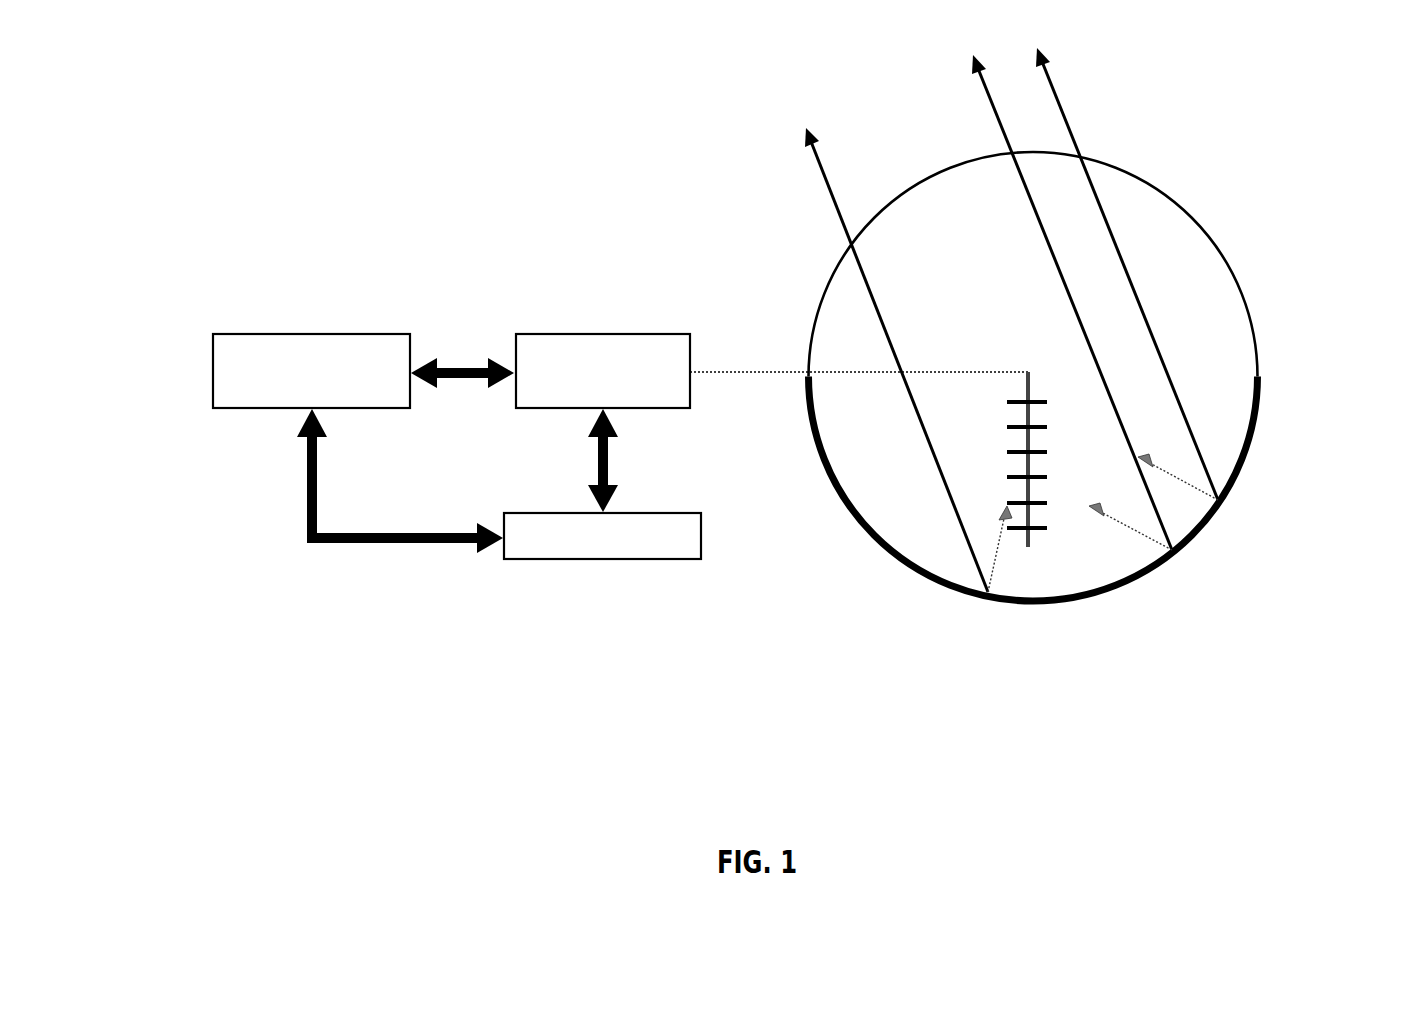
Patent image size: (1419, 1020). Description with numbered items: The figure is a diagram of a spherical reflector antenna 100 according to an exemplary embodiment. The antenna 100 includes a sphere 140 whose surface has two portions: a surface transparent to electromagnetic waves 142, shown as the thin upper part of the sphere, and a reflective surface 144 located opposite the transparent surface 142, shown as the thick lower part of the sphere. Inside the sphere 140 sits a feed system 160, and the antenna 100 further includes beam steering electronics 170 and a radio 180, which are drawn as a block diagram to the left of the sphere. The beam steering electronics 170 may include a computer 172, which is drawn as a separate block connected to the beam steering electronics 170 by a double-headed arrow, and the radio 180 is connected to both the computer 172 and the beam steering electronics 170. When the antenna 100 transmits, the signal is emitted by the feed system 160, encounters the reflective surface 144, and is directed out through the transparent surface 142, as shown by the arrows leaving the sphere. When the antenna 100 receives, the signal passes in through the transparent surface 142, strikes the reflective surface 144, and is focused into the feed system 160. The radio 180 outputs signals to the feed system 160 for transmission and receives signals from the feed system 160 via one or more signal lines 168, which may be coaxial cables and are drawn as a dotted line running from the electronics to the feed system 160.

The spherical reflector antenna 100 is at (1222, 160).
The sphere 140 is at (1088, 376).
The transparent surface 142 is at (1054, 264).
The reflective surface 144 is at (1054, 489).
The feed system 160 is at (1049, 459).
The signal lines 168 is at (859, 347).
The beam steering electronics 170 is at (626, 371).
The computer 172 is at (288, 371).
The radio 180 is at (625, 536).